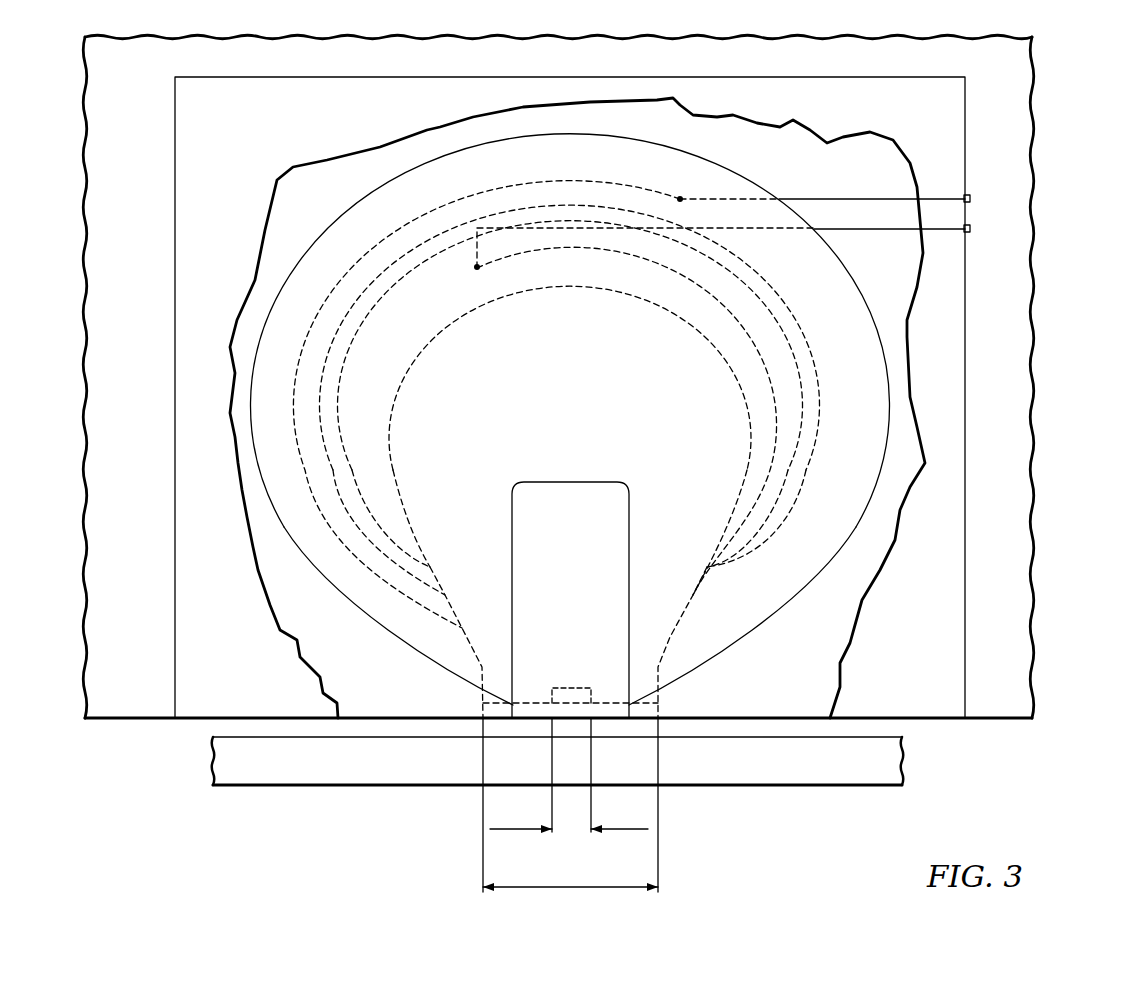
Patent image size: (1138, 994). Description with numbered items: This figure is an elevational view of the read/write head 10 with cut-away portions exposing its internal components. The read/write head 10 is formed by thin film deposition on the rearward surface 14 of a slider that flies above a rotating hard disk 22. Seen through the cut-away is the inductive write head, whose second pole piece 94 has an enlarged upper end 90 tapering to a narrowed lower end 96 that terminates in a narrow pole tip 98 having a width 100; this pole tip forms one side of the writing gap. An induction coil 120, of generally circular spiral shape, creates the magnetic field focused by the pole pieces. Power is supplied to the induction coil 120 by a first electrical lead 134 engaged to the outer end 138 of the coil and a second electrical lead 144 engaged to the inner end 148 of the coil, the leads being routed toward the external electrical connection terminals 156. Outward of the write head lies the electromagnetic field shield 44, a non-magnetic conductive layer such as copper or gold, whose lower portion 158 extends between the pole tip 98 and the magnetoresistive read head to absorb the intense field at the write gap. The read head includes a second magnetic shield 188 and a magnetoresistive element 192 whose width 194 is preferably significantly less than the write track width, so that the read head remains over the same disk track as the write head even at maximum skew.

The read/write head 10 is at (175, 160).
The rearward surface 14 is at (139, 271).
The hard disk 22 is at (846, 780).
The electromagnetic field shield 44 is at (335, 232).
The upper end of second pole piece 90 is at (593, 315).
The second pole piece 94 is at (620, 388).
The lower end of second pole piece 96 is at (673, 612).
The pole tip of second pole piece 98 is at (652, 711).
The width of second pole tip 100 is at (570, 805).
The induction coil 120 is at (785, 302).
The first electrical lead 134 is at (870, 199).
The outer end of coil 138 is at (680, 199).
The second electrical lead 144 is at (893, 232).
The inner end of coil 148 is at (480, 266).
The external electrical connection terminals 156 is at (970, 199).
The lower portion of shield 158 is at (537, 690).
The second magnetic shield 188 is at (620, 521).
The magnetoresistive element 192 is at (580, 688).
The width of MR element 194 is at (569, 818).